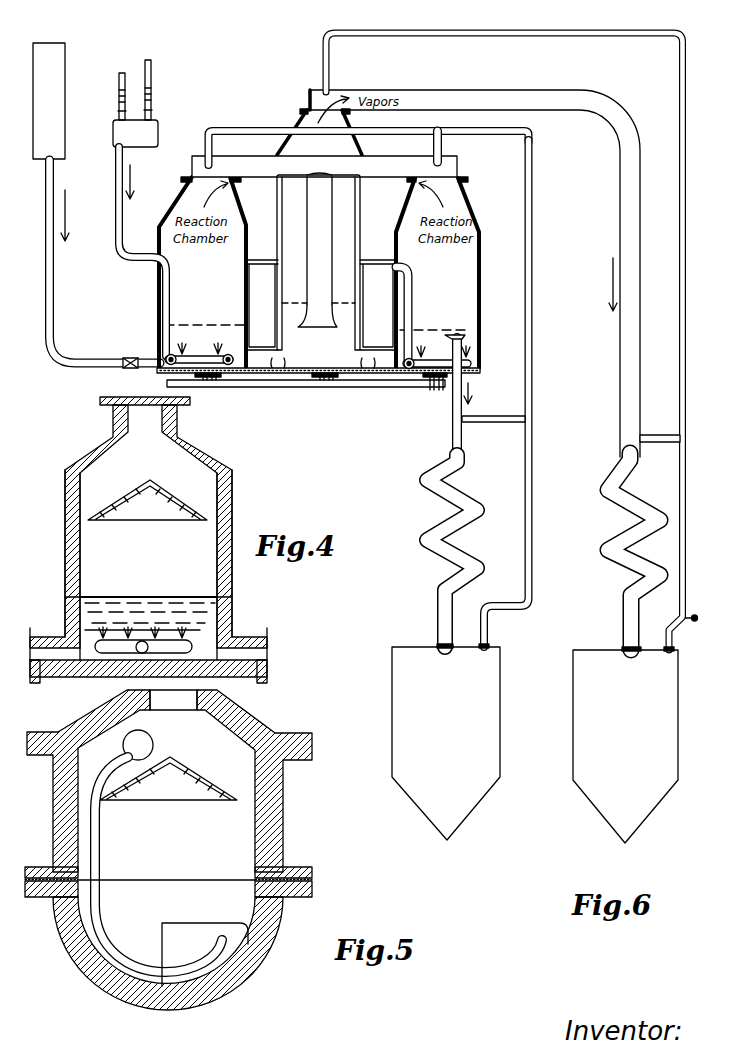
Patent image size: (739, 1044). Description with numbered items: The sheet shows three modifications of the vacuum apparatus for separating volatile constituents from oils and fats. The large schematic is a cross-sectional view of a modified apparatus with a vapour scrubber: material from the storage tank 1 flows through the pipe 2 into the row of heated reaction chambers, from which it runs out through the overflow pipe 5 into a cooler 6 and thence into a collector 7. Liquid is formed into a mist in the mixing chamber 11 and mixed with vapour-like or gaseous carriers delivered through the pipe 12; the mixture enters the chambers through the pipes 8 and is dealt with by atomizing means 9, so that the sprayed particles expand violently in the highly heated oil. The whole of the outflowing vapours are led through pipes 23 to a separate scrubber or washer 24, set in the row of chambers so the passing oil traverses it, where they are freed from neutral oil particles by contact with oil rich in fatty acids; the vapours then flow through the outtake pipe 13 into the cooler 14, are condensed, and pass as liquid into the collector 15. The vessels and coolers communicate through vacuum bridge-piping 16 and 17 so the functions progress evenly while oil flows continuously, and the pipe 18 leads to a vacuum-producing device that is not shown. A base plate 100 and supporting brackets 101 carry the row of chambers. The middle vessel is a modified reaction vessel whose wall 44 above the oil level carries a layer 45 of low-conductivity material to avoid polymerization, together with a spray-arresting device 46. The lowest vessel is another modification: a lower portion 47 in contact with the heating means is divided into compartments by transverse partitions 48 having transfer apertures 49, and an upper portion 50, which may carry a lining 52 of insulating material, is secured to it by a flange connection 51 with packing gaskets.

In FIG. 6, the storage tank 1 is at (60, 93).
In FIG. 6, the pipe 2 is at (47, 244).
In FIG. 6, the overflow pipe 5 is at (463, 338).
In FIG. 6, the cooler 6 is at (440, 484).
In FIG. 6, the collector 7 is at (490, 715).
In FIG. 6, the pipes 8 is at (122, 231).
In FIG. 6, the atomizing means 9 is at (207, 364).
In FIG. 6, the mixing chamber 11 is at (158, 134).
In FIG. 6, the pipe 12 is at (152, 80).
In FIG. 6, the outtake pipe 13 is at (628, 224).
In FIG. 6, the cooler 14 is at (607, 486).
In FIG. 6, the collector 15 is at (592, 736).
In FIG. 6, the vacuum bridge-piping 16 is at (682, 229).
In FIG. 6, the vacuum bridge-piping 17 is at (531, 360).
In FIG. 6, the pipe 18 is at (689, 623).
In FIG. 6, the pipes 23 is at (248, 155).
In FIG. 6, the scrubber or washer 24 is at (308, 342).
In FIG. 4, the wall 44 is at (230, 619).
In FIG. 4, the layer of material of low conductivity 45 is at (228, 513).
In FIG. 4, the spray-arresting device 46 is at (170, 488).
In FIG. 5, the lower portion 47 is at (267, 935).
In FIG. 5, the transverse partitions 48 is at (233, 902).
In FIG. 5, the transfer apertures 49 is at (215, 963).
In FIG. 5, the upper portion 50 is at (283, 818).
In FIG. 5, the flange connection 51 is at (296, 872).
In FIG. 5, the lining of insulating material 52 is at (262, 782).
In FIG. 6, the base plate 100 is at (320, 389).
In FIG. 6, the bracket 101 is at (217, 383).